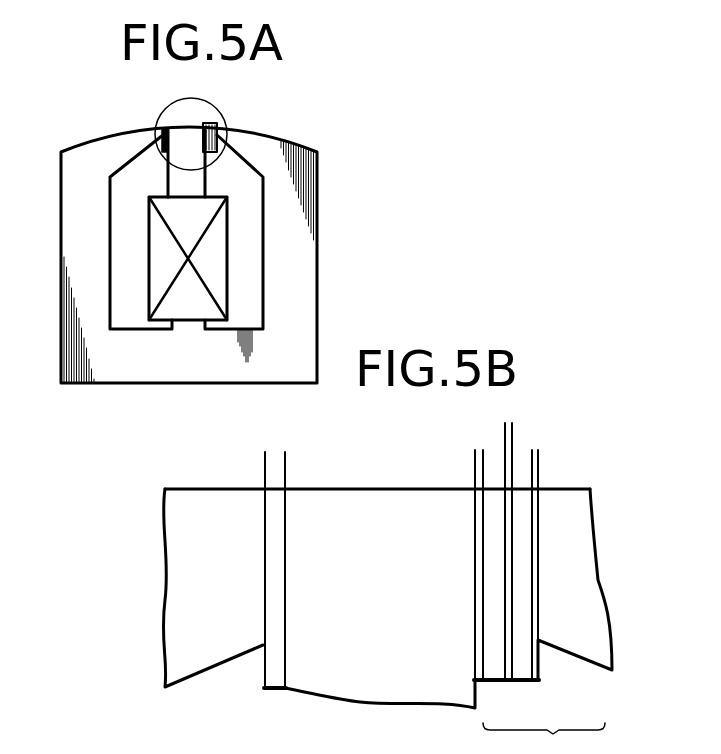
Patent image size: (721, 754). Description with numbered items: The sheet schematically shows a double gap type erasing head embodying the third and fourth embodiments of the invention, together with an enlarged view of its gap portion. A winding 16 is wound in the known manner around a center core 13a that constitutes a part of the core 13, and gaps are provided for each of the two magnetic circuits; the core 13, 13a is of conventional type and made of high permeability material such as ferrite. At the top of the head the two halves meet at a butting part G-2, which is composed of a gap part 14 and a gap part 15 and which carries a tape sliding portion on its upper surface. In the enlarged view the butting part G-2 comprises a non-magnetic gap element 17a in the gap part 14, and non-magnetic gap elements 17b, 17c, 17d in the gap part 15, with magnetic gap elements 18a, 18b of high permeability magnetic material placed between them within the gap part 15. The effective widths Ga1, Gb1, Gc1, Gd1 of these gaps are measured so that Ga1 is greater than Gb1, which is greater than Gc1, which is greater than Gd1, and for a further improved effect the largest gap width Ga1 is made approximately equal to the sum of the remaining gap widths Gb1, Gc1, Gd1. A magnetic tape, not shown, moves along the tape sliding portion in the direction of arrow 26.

In FIG. 5A, the core 13 is at (62, 226).
In FIG. 5B, the core 13 is at (178, 547).
In FIG. 5A, the center core 13a is at (185, 133).
In FIG. 5B, the center core 13a is at (326, 500).
In FIG. 5A, the gap part 14 is at (160, 130).
In FIG. 5A, the gap part 15 is at (210, 123).
In FIG. 5B, the gap part 15 is at (563, 753).
In FIG. 5A, the winding 16 is at (188, 318).
In FIG. 5A, the butting part G-2 is at (222, 122).
In FIG. 5B, the arrow 26 is at (430, 470).
In FIG. 5B, the effective gap width Ga1 is at (300, 459).
In FIG. 5B, the effective gap width Gb1 is at (495, 455).
In FIG. 5B, the effective gap width Gc1 is at (525, 427).
In FIG. 5B, the effective gap width Gd1 is at (552, 455).
In FIG. 5B, the non-magnetic gap element 17a is at (264, 686).
In FIG. 5B, the non-magnetic gap element 17b is at (484, 683).
In FIG. 5B, the non-magnetic gap element 17c is at (508, 683).
In FIG. 5B, the non-magnetic gap element 17d is at (540, 682).
In FIG. 5B, the magnetic gap element 18a is at (523, 721).
In FIG. 5B, the magnetic gap element 18b is at (573, 721).